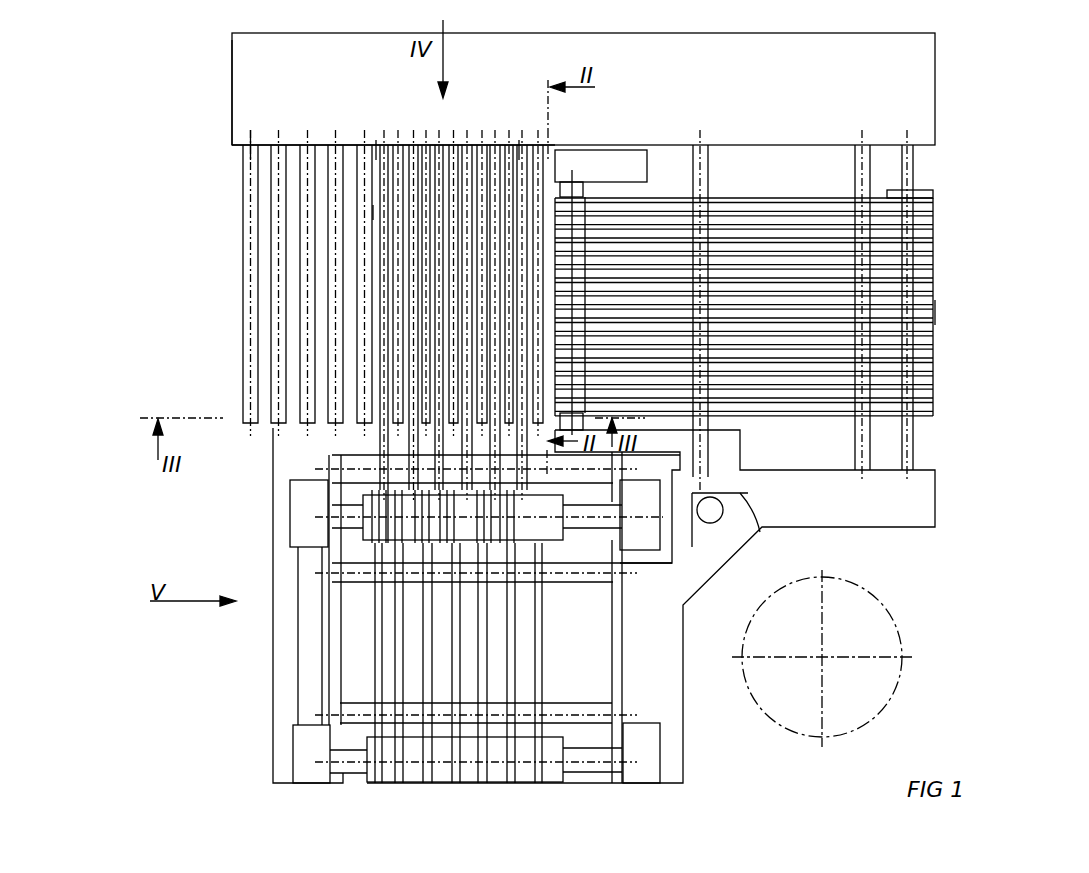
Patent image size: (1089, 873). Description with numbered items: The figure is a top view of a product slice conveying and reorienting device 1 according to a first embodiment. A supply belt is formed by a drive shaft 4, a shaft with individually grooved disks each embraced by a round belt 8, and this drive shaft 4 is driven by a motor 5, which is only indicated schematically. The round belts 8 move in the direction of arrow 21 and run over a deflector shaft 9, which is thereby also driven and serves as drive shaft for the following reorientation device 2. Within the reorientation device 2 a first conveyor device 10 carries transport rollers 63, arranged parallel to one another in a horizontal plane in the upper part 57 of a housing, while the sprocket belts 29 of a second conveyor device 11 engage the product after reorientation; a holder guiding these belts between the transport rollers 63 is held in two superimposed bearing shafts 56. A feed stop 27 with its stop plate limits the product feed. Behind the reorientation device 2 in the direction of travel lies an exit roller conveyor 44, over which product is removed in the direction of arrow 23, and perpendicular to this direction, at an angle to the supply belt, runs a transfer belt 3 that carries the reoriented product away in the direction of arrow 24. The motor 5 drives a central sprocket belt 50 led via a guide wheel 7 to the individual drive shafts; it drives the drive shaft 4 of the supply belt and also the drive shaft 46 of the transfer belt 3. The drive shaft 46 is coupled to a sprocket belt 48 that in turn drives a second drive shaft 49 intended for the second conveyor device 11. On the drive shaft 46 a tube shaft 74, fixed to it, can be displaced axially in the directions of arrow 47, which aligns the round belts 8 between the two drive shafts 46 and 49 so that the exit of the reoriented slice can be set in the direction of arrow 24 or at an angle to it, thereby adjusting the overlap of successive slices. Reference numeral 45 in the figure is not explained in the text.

The press 1 is at (900, 103).
The reorientation device 2 is at (500, 82).
The transfer belt 3 is at (570, 670).
The drive shaft 4 is at (935, 290).
The motor 5 is at (870, 618).
The guide wheel 7 is at (716, 520).
The round belt 8 is at (832, 392).
The deflector shaft 9 is at (587, 183).
The first conveyor device 10 is at (496, 100).
The second conveyor device 11 is at (427, 110).
The arrow 21 is at (1088, 312).
The arrow 23 is at (378, 93).
The arrow 24 is at (443, 670).
The feed stop 27 is at (373, 213).
The sprocket belts 29 is at (520, 143).
The exit roller conveyor 44 is at (262, 128).
The rods 45 is at (253, 372).
The drive shaft 46 is at (588, 770).
The arrow 47 is at (415, 822).
The sprocket belt 48 is at (300, 642).
The second drive shaft 49 is at (343, 518).
The central sprocket belt 50 is at (760, 532).
The bearing shafts 56 is at (355, 475).
The upper part 57 is at (237, 72).
The transport rollers 63 is at (282, 153).
The tube shaft 74 is at (550, 782).